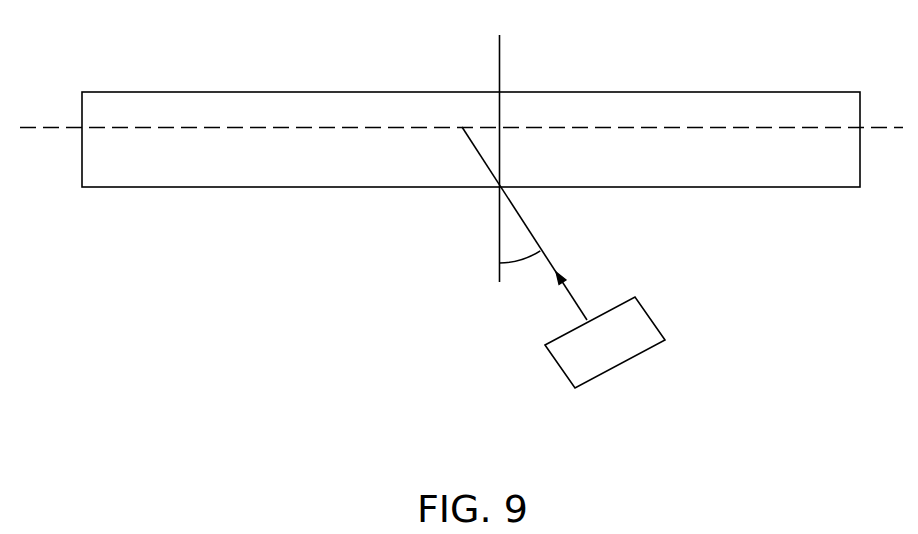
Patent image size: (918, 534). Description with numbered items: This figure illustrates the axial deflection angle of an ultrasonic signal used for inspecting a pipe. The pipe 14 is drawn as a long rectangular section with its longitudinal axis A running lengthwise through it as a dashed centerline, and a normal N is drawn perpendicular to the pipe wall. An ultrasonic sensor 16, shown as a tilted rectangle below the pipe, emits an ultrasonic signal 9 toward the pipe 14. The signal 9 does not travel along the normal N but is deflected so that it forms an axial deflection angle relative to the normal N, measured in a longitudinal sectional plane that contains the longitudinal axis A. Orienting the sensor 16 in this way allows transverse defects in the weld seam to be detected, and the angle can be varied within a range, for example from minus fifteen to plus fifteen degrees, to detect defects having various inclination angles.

The pipe 14 is at (680, 91).
The longitudinal axis A is at (892, 131).
The normal N is at (498, 60).
The ultrasonic signal 9 is at (555, 263).
The sensor 16 is at (651, 318).